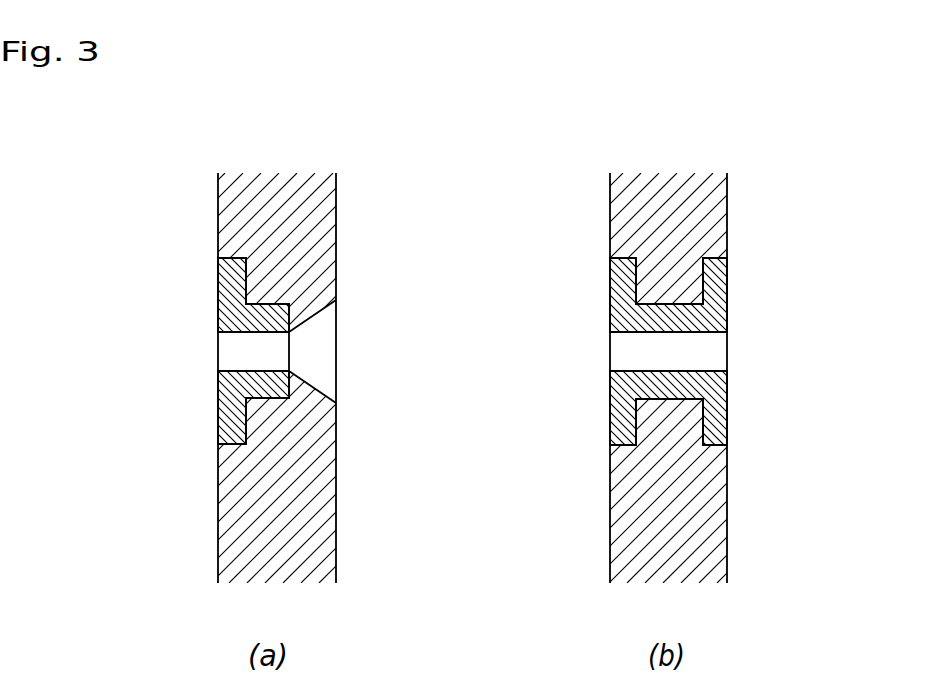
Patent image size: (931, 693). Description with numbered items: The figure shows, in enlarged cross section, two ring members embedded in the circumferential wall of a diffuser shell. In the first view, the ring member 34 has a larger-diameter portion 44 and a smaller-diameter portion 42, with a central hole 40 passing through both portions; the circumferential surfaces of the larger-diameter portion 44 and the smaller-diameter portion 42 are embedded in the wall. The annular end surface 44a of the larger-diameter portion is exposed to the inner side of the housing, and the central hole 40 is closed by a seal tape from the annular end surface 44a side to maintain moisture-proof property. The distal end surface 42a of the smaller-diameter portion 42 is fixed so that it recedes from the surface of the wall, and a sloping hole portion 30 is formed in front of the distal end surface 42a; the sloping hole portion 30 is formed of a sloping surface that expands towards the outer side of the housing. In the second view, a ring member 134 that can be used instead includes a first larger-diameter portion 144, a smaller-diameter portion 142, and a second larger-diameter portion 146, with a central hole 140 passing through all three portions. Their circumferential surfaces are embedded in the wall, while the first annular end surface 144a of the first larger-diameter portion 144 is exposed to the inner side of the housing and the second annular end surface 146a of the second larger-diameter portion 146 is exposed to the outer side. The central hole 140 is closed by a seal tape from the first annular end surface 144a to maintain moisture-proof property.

The annular end surface 44a is at (218, 288).
The central hole 40 is at (218, 352).
The ring member 34 is at (213, 397).
The larger-diameter portion 44 is at (218, 425).
The sloping hole portion 30 is at (305, 322).
The distal end surface 42a is at (290, 397).
The smaller-diameter portion 42 is at (272, 398).
The smaller-diameter portion 142 is at (672, 300).
The first annular end surface 144a is at (610, 302).
The ring member 134 is at (600, 378).
The first larger-diameter portion 144 is at (610, 412).
The second annular end surface 146a is at (727, 303).
The central hole 140 is at (713, 350).
The second larger-diameter portion 146 is at (725, 410).